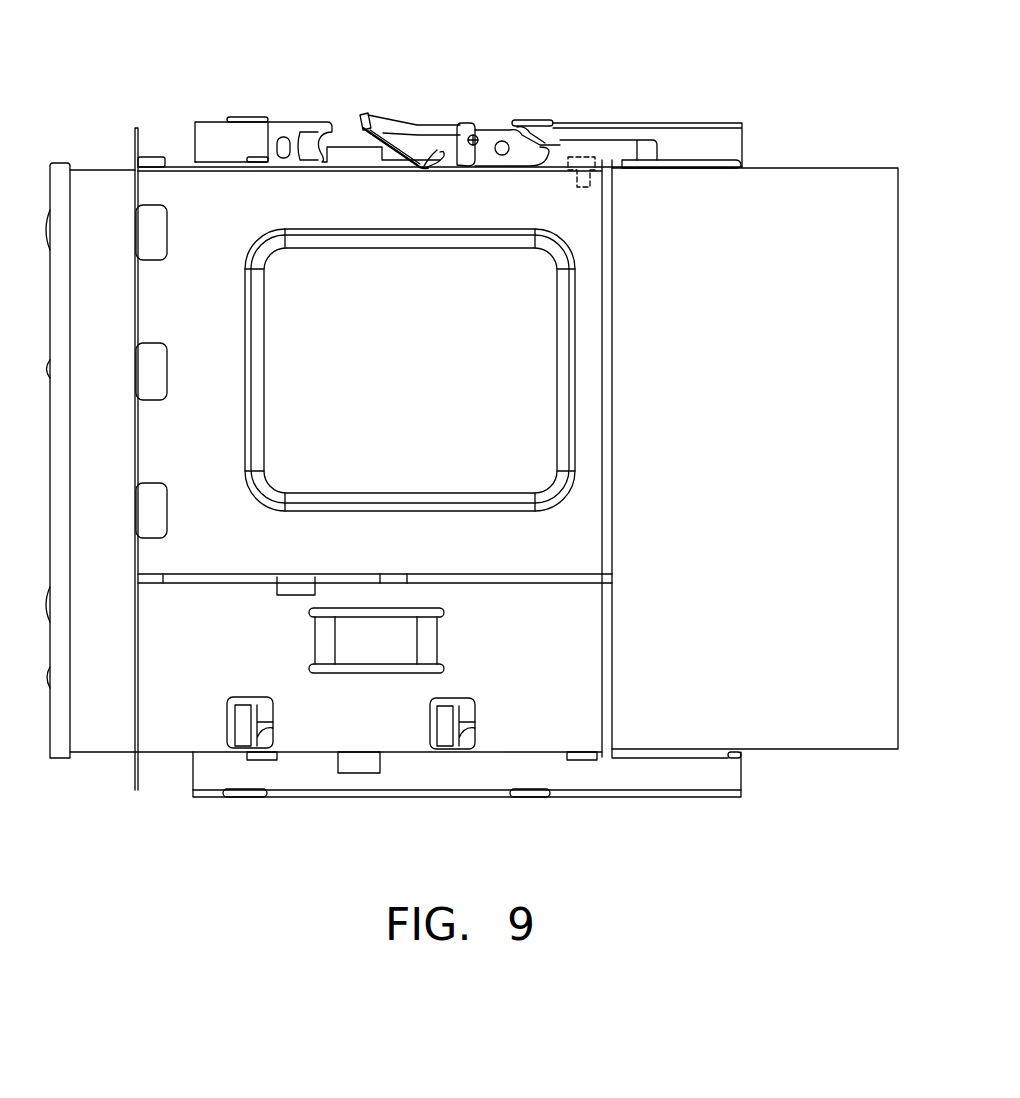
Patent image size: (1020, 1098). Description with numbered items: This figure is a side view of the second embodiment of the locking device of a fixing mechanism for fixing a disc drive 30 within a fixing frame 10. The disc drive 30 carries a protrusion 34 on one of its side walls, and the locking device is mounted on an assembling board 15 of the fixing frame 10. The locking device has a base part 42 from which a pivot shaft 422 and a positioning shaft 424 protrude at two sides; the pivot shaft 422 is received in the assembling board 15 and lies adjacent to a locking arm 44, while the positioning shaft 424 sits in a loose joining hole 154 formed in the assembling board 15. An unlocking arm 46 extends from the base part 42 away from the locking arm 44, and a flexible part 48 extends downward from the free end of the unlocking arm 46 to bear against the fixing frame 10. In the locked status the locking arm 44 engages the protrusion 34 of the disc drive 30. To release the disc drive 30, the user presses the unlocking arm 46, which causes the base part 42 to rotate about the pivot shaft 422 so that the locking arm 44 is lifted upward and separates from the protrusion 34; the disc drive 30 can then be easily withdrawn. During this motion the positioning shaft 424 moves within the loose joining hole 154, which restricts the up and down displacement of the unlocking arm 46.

The fixing frame 10 is at (176, 160).
The disc drive 30 is at (99, 180).
The assembling board 15 is at (487, 147).
The loose joining hole 154 is at (475, 143).
The positioning shaft 424 is at (468, 137).
The pivot shaft 422 is at (503, 140).
The base part 42 is at (520, 150).
The unlocking arm 46 is at (392, 117).
The flexible part 48 is at (392, 160).
The locking arm 44 is at (622, 147).
The protrusion 34 is at (578, 143).